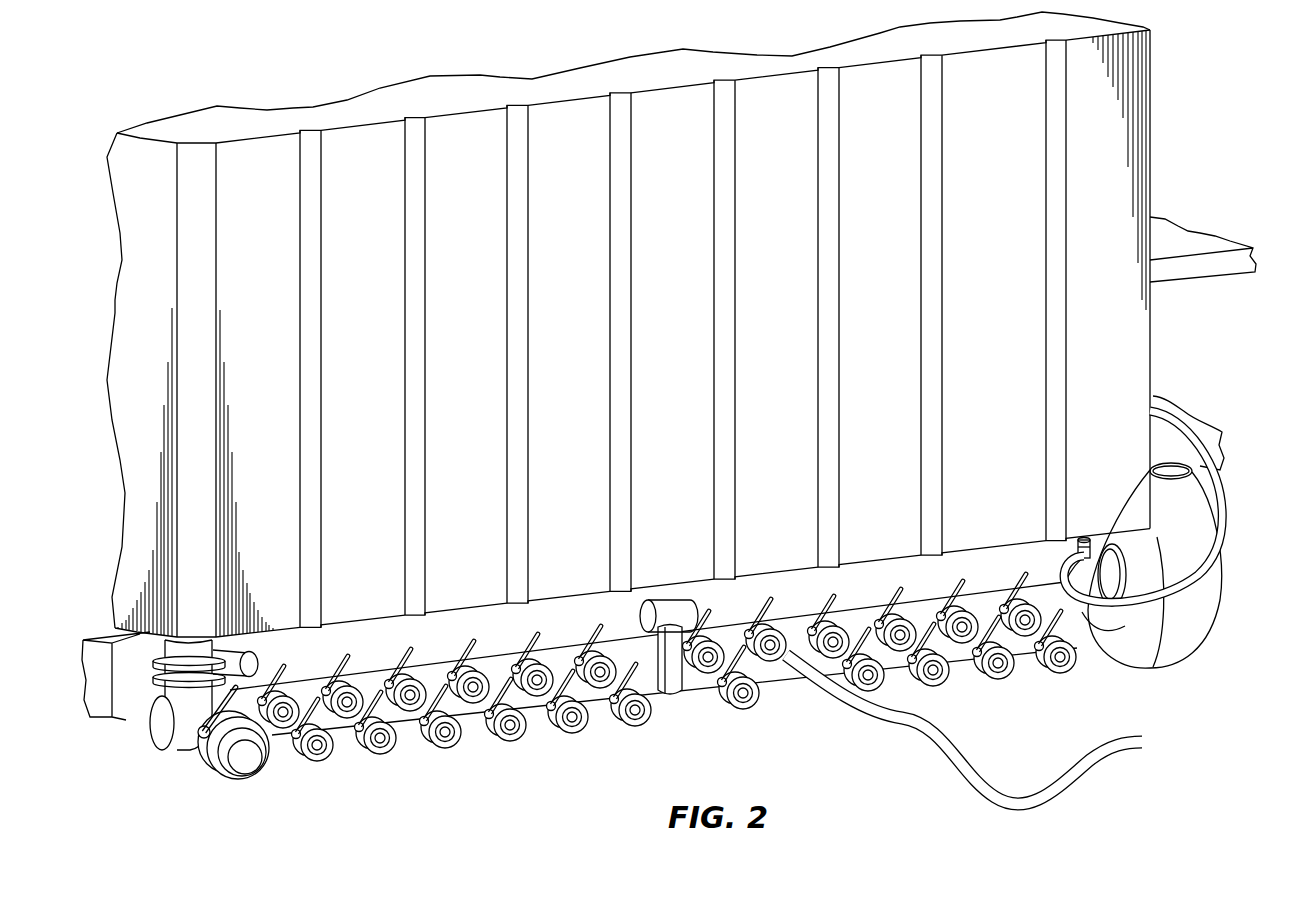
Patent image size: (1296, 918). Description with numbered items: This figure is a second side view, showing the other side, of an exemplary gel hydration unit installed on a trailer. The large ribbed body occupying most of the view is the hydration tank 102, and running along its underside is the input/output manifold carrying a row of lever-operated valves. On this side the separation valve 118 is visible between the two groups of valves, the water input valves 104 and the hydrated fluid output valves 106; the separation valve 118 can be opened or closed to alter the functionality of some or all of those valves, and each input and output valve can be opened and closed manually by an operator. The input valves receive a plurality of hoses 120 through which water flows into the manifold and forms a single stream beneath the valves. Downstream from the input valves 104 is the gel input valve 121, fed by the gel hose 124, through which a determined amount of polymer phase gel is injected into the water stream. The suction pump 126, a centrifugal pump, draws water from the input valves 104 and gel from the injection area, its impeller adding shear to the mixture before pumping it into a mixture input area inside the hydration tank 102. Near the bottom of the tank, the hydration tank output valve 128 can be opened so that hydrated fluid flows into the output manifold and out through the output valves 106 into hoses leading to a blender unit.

The hydration tank 102 is at (687, 352).
The water input valves 104 is at (715, 738).
The hydrated fluid output valves 106 is at (660, 745).
The separation valve 118 is at (676, 694).
The hoses 120 is at (922, 759).
The gel input valve 121 is at (1086, 540).
The gel hose 124 is at (1225, 522).
The suction pump 126 is at (1188, 665).
The hydration tank output valve 128 is at (160, 692).